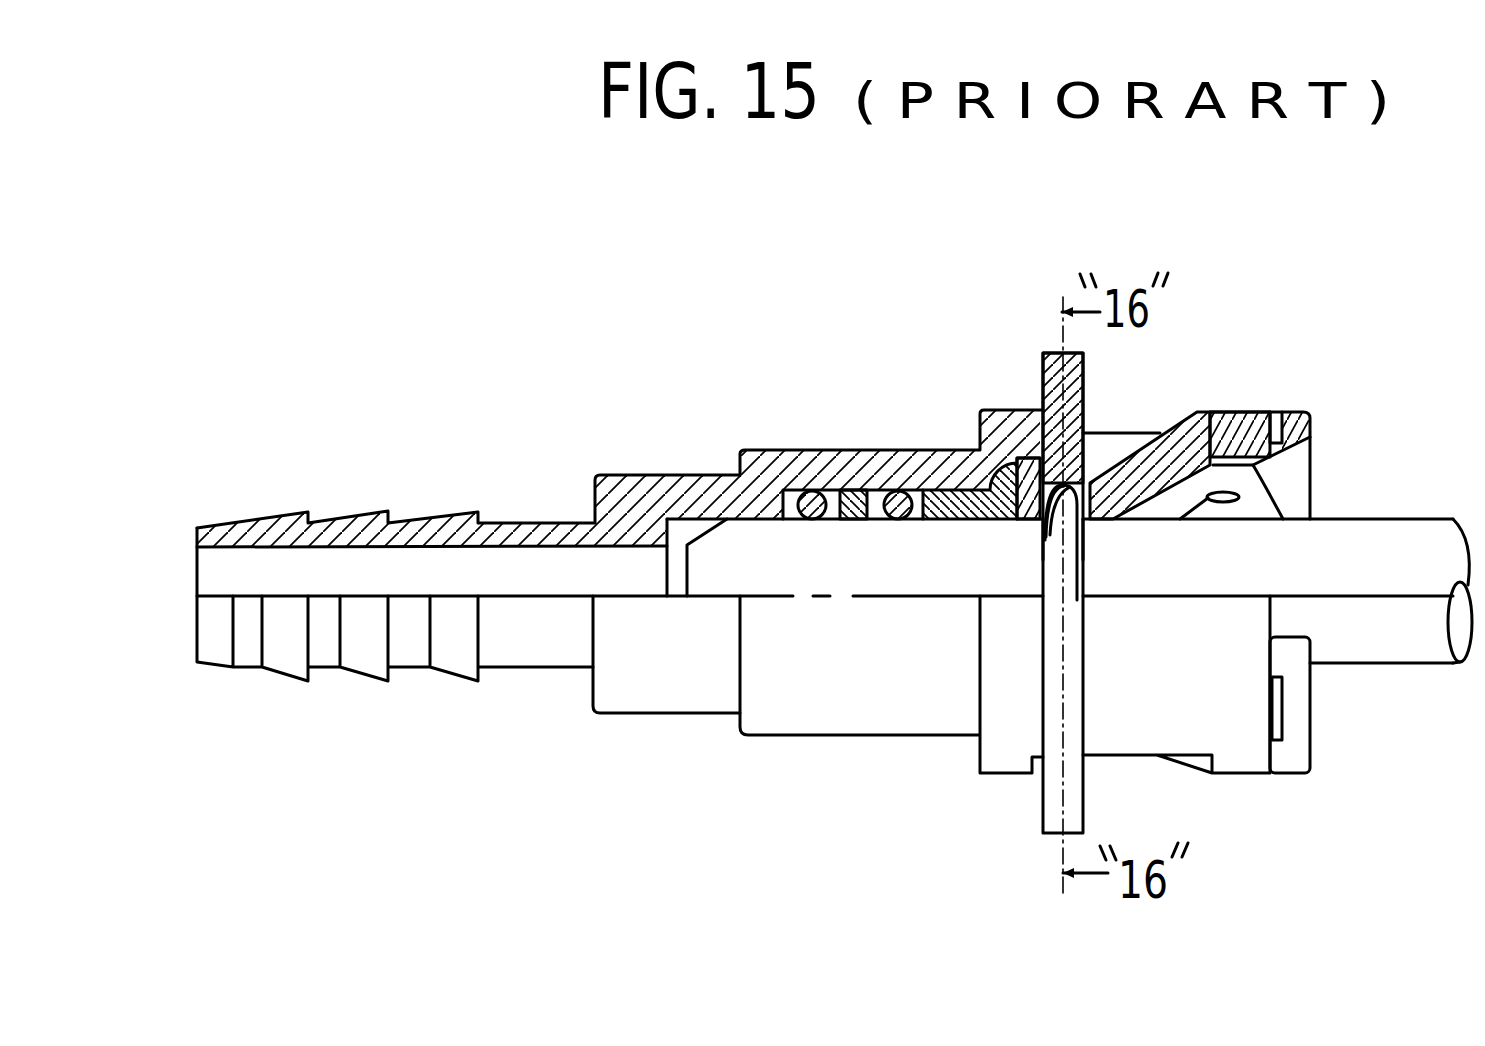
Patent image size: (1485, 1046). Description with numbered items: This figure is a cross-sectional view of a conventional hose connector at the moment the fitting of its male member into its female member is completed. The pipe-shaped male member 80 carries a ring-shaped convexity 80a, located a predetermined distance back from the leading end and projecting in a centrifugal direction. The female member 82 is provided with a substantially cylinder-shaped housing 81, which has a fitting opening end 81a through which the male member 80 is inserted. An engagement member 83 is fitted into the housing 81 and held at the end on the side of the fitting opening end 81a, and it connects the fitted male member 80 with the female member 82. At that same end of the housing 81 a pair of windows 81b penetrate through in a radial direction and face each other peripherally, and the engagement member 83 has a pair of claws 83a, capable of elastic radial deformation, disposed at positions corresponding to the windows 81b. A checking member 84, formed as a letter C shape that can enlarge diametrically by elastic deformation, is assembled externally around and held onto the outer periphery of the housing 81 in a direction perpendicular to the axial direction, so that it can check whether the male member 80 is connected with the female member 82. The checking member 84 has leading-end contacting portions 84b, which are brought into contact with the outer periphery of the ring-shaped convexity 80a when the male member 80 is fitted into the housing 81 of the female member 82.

The male member 80 is at (1386, 535).
The ring-shaped convexity 80a is at (1070, 547).
The housing 81 is at (810, 448).
The fitting opening end 81a is at (1280, 410).
The windows 81b is at (1105, 432).
The female member 82 is at (642, 471).
The engagement member 83 is at (1308, 400).
The claws 83a is at (1113, 457).
The checking member 84 is at (1083, 415).
The leading-end contacting portions 84b is at (1045, 535).